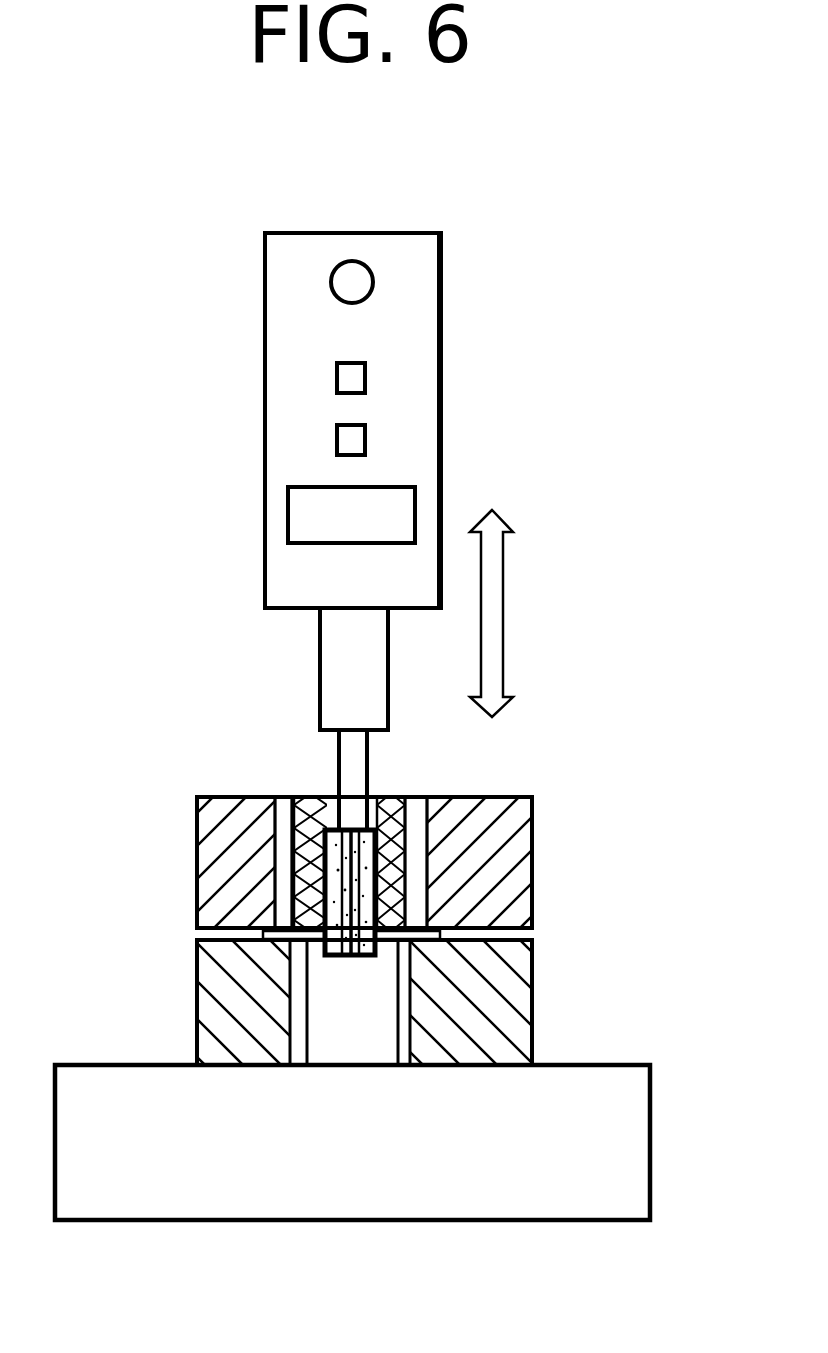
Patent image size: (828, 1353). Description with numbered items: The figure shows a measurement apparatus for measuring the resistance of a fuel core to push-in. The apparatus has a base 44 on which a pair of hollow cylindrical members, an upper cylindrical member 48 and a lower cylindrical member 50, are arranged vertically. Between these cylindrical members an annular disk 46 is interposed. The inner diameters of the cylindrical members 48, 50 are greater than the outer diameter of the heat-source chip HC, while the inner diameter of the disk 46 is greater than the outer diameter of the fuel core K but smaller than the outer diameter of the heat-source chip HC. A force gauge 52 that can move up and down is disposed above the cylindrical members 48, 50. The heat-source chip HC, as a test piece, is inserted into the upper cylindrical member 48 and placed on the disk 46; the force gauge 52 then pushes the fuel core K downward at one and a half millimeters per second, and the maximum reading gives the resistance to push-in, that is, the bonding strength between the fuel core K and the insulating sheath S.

The base 44 is at (625, 1110).
The annular disk 46 is at (272, 932).
The upper cylindrical member 48 is at (520, 858).
The lower cylindrical member 50 is at (520, 975).
The force gauge 52 is at (283, 338).
The heat-source chip HC is at (293, 790).
The insulating sheath S is at (388, 797).
The fuel core K is at (337, 953).